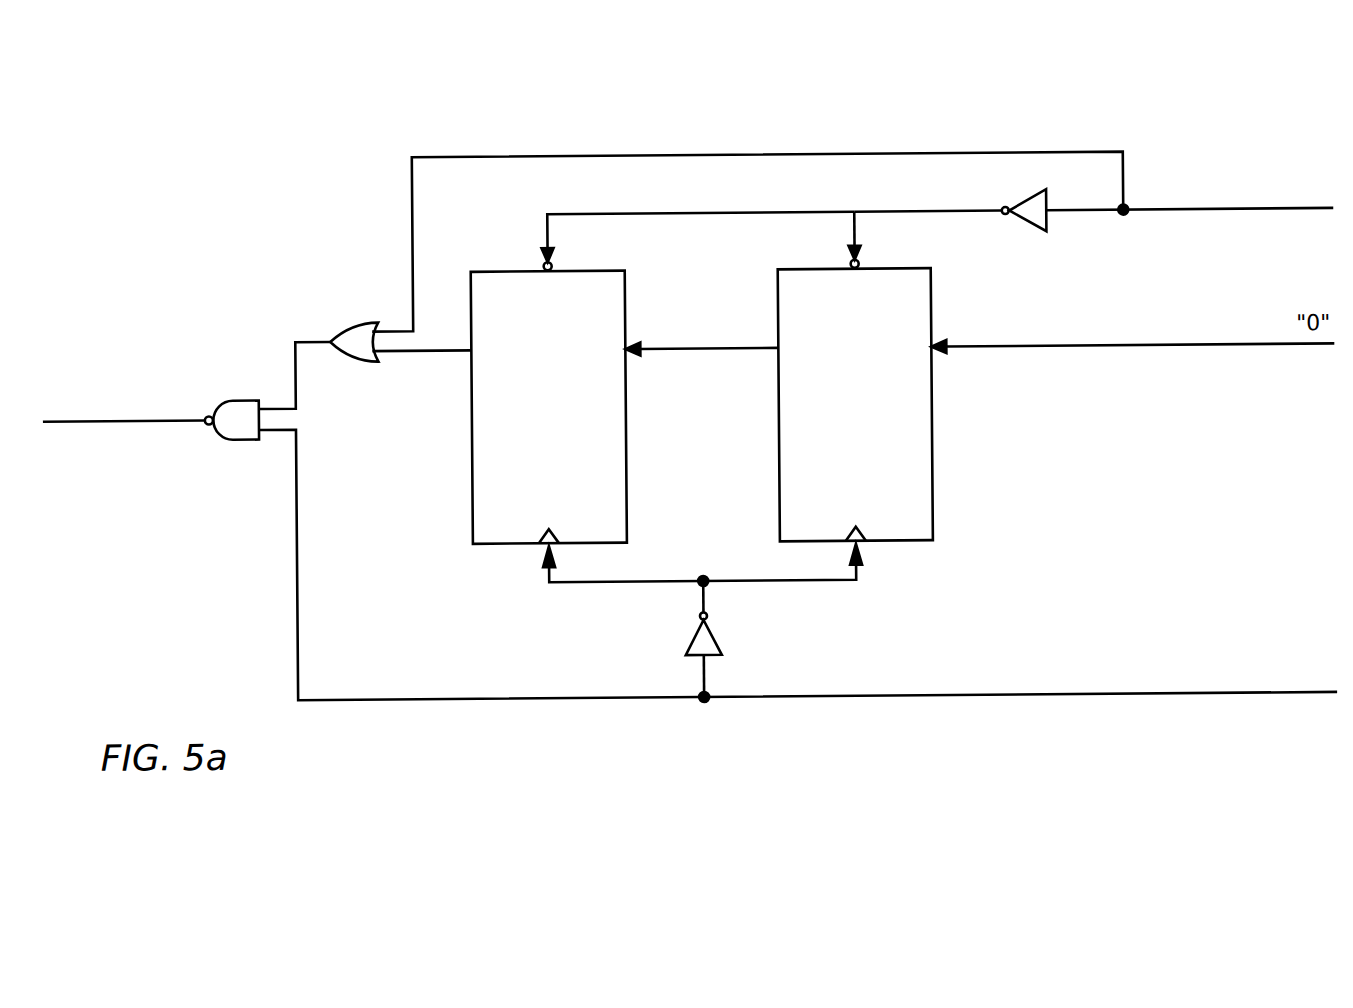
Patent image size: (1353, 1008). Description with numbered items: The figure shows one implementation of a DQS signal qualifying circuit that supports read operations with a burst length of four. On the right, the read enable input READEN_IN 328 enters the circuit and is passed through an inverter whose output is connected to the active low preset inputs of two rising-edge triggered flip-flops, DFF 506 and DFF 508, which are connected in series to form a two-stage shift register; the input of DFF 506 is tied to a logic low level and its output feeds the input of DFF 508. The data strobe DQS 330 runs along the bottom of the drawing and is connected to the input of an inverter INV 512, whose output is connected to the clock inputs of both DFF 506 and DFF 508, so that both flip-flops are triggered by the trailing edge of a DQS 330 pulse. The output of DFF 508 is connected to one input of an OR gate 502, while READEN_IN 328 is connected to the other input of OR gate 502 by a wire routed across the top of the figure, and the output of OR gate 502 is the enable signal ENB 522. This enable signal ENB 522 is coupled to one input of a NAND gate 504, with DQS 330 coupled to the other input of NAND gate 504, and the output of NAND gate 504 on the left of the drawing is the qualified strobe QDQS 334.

The OR gate 502 is at (357, 321).
The NAND gate 504 is at (240, 438).
The flip-flop 506 is at (838, 433).
The flip-flop 508 is at (531, 433).
The inverter 512 is at (692, 639).
The enable signal 522 is at (287, 370).
The READEN_IN 328 is at (1144, 204).
The DQS 330 is at (798, 563).
The QDQS 334 is at (124, 406).